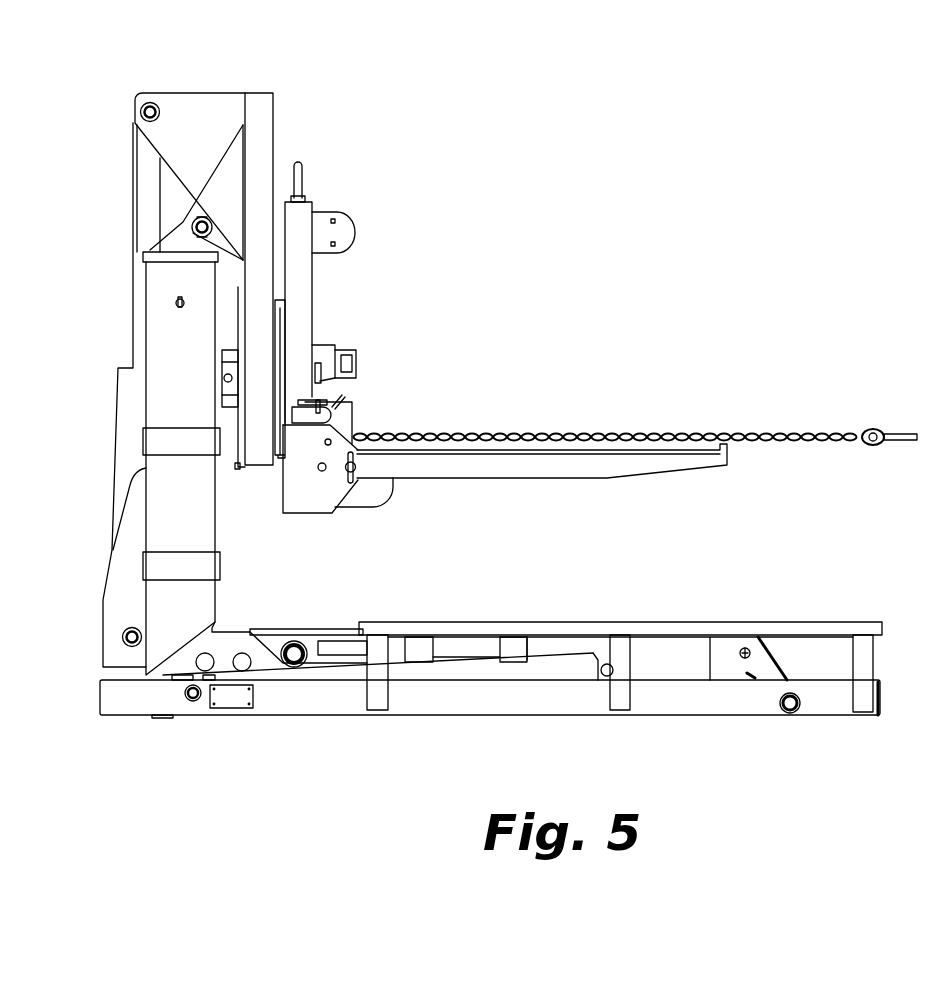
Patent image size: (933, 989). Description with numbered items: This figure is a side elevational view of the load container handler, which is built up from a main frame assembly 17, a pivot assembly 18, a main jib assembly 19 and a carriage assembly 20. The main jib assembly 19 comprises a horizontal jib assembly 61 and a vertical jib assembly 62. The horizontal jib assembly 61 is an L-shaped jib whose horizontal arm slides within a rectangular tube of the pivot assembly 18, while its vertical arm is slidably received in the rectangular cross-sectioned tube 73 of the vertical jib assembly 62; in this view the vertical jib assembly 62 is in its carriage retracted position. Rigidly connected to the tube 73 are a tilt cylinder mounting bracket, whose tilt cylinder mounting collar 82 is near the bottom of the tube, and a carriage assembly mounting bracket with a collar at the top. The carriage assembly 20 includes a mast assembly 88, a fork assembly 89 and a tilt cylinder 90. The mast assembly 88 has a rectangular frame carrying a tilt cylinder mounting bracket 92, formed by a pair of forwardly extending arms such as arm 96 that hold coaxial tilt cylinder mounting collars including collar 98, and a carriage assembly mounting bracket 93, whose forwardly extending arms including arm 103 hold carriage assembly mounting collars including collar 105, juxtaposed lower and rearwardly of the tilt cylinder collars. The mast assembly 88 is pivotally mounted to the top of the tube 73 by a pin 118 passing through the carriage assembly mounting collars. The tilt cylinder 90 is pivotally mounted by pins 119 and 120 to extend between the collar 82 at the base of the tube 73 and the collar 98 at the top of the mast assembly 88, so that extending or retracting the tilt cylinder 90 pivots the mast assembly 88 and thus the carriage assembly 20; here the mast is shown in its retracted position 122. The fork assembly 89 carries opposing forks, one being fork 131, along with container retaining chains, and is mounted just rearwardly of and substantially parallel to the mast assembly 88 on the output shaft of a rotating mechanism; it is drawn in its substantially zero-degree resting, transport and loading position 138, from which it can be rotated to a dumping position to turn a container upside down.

The main frame assembly 17 is at (516, 716).
The pivot assembly 18 is at (780, 663).
The main jib assembly 19 is at (262, 590).
The carriage assembly 20 is at (420, 104).
The horizontal jib assembly 61 is at (323, 629).
The vertical jib assembly 62 is at (150, 402).
The rectangular cross-sectioned tube 73 is at (152, 487).
The tilt cylinder mounting collar 82 is at (121, 641).
The mast assembly 88 is at (259, 91).
The fork assembly 89 is at (318, 193).
The tilt cylinder 90 is at (118, 383).
The tilt cylinder mounting bracket 92 is at (158, 163).
The carriage assembly mounting bracket 93 is at (218, 147).
The forwardly extending arm 96 is at (172, 98).
The tilt cylinder mounting collar 98 is at (143, 113).
The forwardly extending arm 103 is at (233, 167).
The carriage assembly mounting collar 105 is at (192, 224).
The pin 118 is at (188, 228).
The pin 119 is at (128, 627).
The pin 120 is at (145, 103).
The retracted position 122 is at (580, 158).
The fork 131 is at (587, 479).
The resting, transport and loading position 138 is at (698, 240).